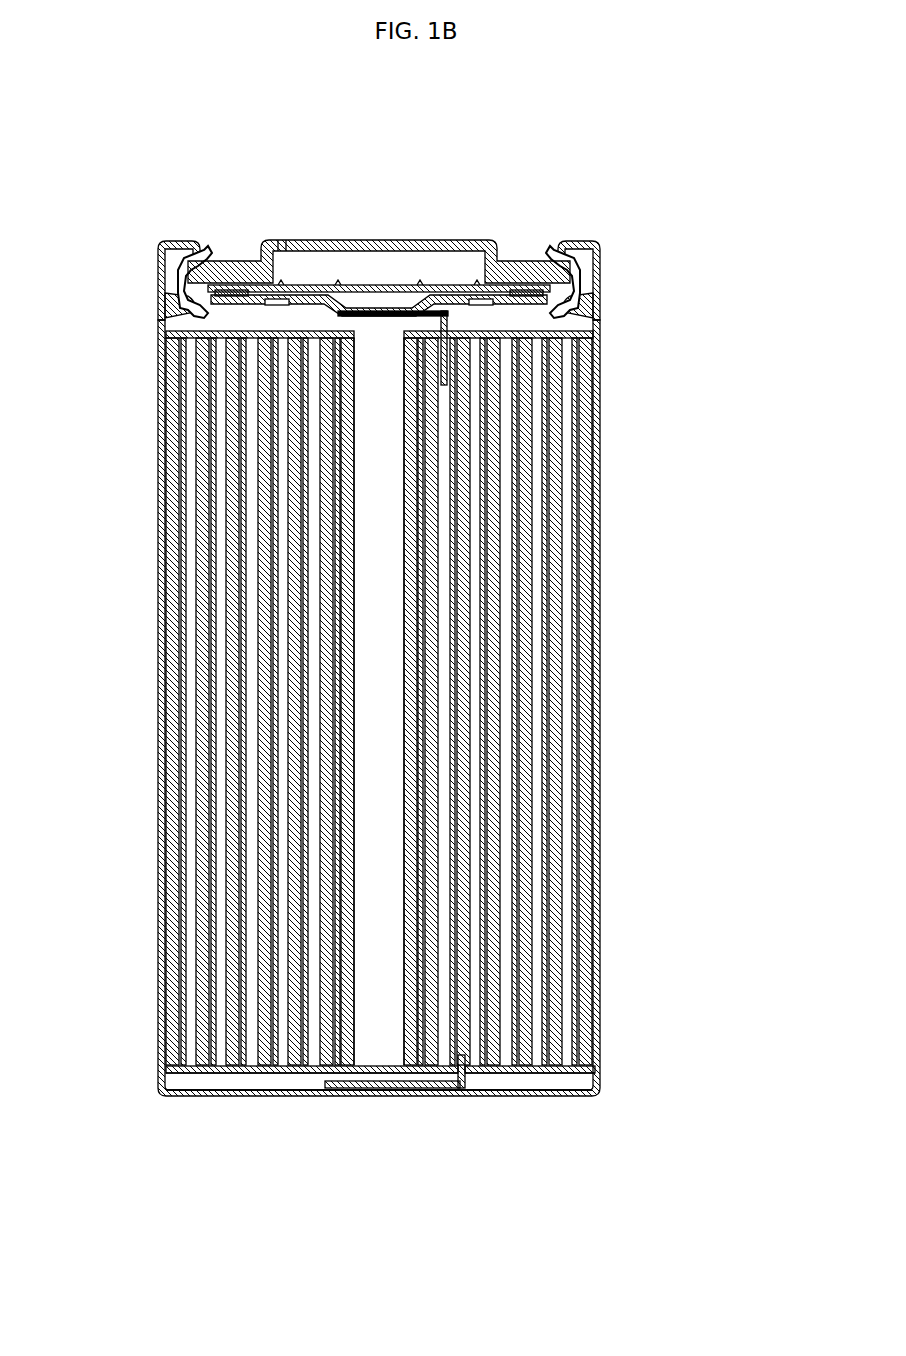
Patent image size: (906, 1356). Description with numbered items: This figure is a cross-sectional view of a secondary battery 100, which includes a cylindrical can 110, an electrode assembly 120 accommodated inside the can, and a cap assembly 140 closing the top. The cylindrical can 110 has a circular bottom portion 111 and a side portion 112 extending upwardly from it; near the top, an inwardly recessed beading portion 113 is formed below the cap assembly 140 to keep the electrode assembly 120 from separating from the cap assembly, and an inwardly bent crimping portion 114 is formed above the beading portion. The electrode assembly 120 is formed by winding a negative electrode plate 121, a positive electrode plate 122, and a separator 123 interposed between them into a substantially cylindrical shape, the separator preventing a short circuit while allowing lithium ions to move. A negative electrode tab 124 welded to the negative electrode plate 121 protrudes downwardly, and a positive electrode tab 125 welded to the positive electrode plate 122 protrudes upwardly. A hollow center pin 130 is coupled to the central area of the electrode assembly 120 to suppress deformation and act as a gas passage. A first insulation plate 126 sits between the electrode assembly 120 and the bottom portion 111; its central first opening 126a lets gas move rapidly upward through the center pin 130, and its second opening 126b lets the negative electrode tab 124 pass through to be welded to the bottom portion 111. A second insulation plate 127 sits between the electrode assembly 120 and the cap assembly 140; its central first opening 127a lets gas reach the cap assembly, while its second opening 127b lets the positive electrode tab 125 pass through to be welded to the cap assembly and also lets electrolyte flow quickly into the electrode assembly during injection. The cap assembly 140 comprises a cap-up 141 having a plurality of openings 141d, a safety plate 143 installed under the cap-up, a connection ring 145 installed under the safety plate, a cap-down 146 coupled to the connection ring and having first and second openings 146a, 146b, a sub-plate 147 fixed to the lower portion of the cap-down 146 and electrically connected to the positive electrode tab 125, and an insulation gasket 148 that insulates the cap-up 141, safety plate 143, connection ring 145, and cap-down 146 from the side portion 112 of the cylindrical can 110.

The secondary battery 100 is at (656, 174).
The cylindrical can 110 is at (431, 675).
The bottom portion 111 is at (550, 1089).
The side portion 112 is at (593, 910).
The beading portion 113 is at (593, 298).
The crimping portion 114 is at (562, 242).
The electrode assembly 120 is at (469, 701).
The negative electrode plate 121 is at (690, 715).
The positive electrode plate 122 is at (556, 706).
The separator 123 is at (570, 650).
The negative electrode tab 124 is at (426, 1089).
The positive electrode tab 125 is at (440, 355).
The first insulation plate 126 is at (435, 1103).
The first opening 126a is at (372, 1064).
The second opening 126b is at (462, 1089).
The second insulation plate 127 is at (327, 381).
The first opening 127a is at (370, 323).
The second opening 127b is at (305, 325).
The center pin 130 is at (400, 796).
The cap assembly 140 is at (383, 226).
The cap-up 141 is at (481, 250).
The openings 141d is at (345, 236).
The safety plate 143 is at (441, 283).
The connection ring 145 is at (228, 257).
The cap-down 146 is at (518, 280).
The first opening 146a is at (373, 290).
The second opening 146b is at (275, 236).
The sub-plate 147 is at (328, 305).
The insulation gasket 148 is at (446, 216).